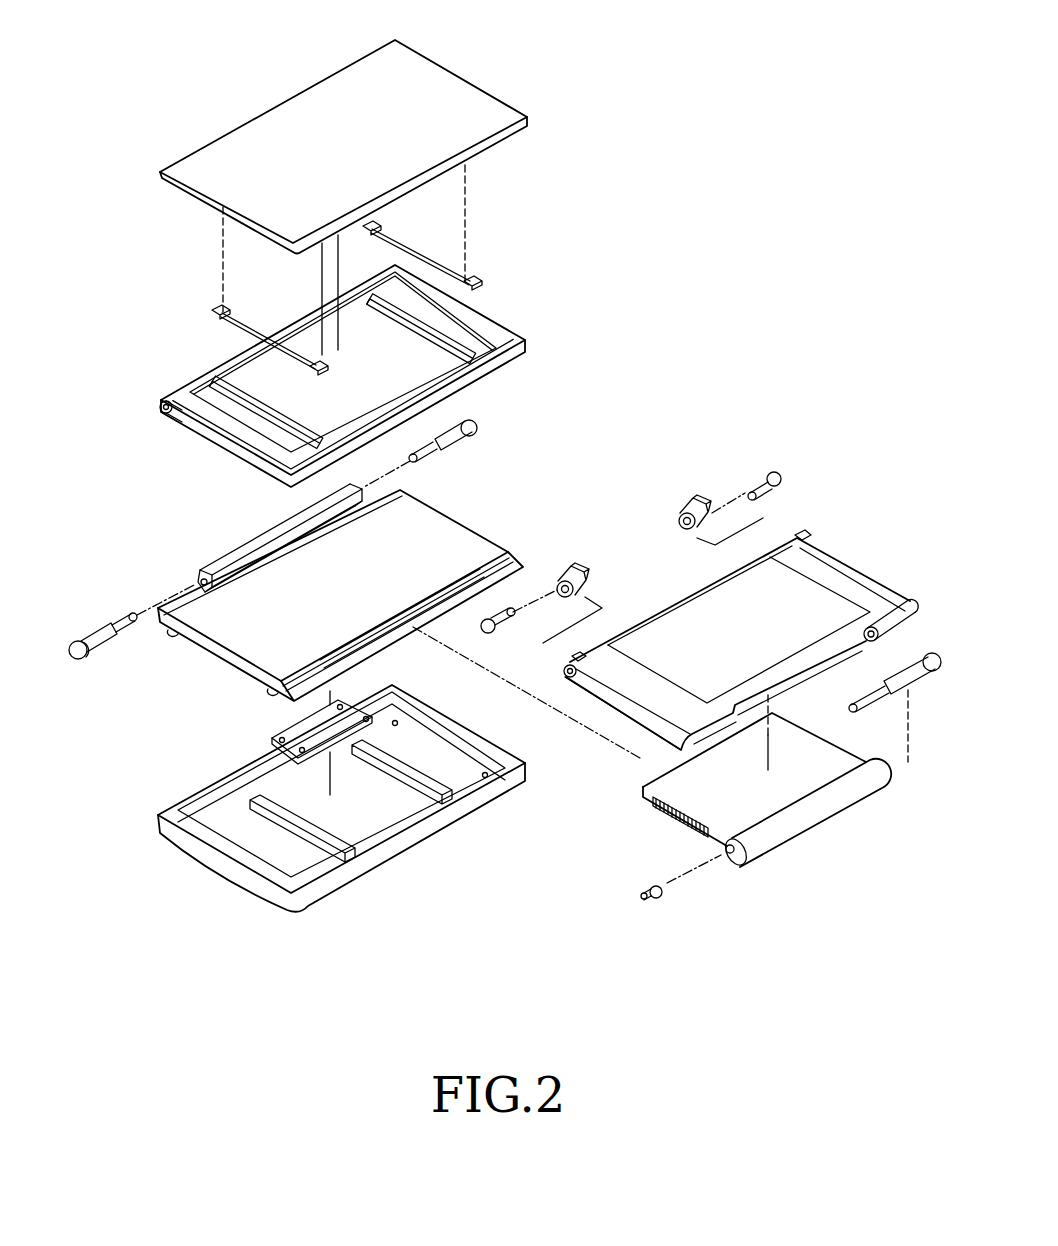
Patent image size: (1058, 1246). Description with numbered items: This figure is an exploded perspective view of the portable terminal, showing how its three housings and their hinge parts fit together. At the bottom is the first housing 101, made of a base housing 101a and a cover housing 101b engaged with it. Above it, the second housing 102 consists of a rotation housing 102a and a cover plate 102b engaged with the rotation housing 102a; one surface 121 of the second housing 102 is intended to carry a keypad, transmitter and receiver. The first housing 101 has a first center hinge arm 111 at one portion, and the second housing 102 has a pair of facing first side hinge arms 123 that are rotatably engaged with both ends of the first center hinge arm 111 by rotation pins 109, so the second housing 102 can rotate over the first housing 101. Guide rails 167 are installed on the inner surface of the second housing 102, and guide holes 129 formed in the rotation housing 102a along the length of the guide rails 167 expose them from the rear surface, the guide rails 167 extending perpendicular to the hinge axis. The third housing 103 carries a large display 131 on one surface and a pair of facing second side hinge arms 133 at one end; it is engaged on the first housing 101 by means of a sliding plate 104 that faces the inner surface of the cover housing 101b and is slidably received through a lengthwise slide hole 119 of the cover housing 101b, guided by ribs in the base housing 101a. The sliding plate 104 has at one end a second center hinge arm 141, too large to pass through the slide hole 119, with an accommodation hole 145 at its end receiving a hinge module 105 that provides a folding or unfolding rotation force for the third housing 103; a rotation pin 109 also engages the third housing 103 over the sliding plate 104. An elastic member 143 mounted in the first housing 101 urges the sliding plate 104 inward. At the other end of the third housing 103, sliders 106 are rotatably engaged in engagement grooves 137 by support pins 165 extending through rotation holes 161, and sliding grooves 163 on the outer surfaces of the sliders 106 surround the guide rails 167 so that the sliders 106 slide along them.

The first housing 101 is at (112, 690).
The base housing 101a is at (208, 772).
The cover housing 101b is at (210, 683).
The second housing 102 is at (613, 195).
The rotation housing 102a is at (518, 298).
The cover plate 102b is at (520, 170).
The third housing 103 is at (818, 526).
The sliding plate 104 is at (806, 722).
The hinge module 105 is at (658, 900).
The slider 106 is at (678, 516).
The rotation pin 109 is at (96, 632).
The first center hinge arm 111 is at (243, 552).
The slide hole 119 is at (382, 632).
The surface of the second housing 121 is at (327, 88).
The first side hinge arm 123 is at (170, 413).
The guide hole 129 is at (520, 340).
The display 131 is at (828, 597).
The second side hinge arm 133 is at (912, 622).
The engagement groove 137 is at (580, 652).
The second center hinge arm 141 is at (783, 827).
The elastic member 143 is at (667, 820).
The accommodation hole 145 is at (728, 860).
The rotation hole 161 is at (673, 518).
The sliding groove 163 is at (578, 563).
The support pin 165 is at (507, 632).
The guide rail 167 is at (405, 248).